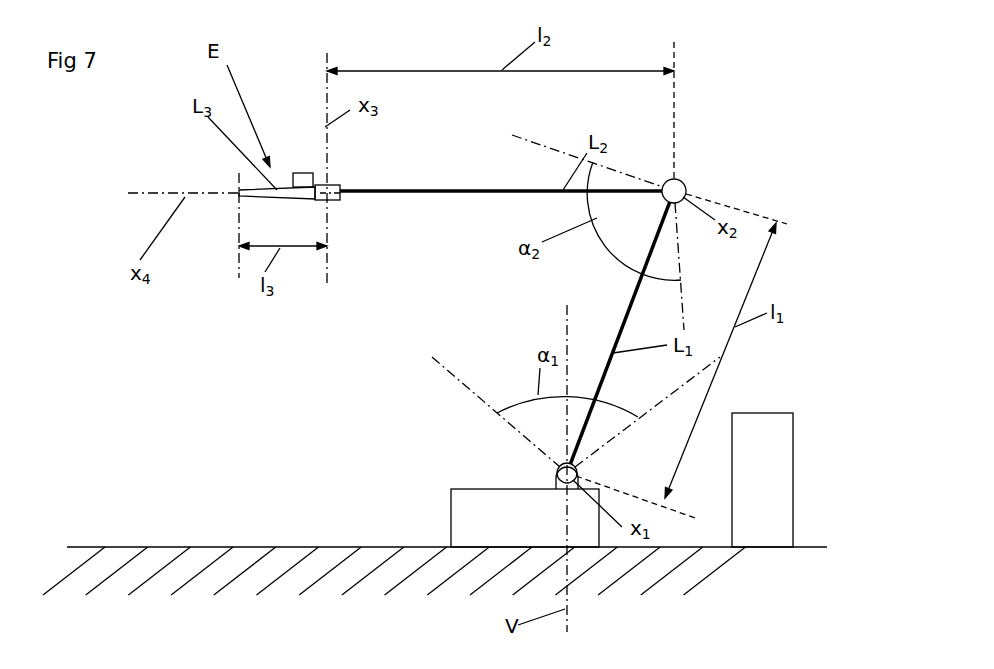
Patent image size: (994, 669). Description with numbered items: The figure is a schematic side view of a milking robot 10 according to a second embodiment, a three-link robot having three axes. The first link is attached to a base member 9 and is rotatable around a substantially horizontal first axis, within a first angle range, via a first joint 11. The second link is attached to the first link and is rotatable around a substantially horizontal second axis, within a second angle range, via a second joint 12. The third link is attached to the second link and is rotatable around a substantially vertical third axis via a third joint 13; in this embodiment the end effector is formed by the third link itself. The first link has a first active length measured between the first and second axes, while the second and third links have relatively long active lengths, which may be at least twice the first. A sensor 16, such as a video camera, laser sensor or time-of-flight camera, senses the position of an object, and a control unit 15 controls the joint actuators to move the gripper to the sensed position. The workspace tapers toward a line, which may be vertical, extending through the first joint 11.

The base member 9 is at (483, 516).
The milking robot 10 is at (733, 95).
The first joint 11 is at (557, 472).
The second joint 12 is at (679, 184).
The third joint 13 is at (340, 198).
The control unit 15 is at (752, 440).
The sensor 16 is at (302, 172).